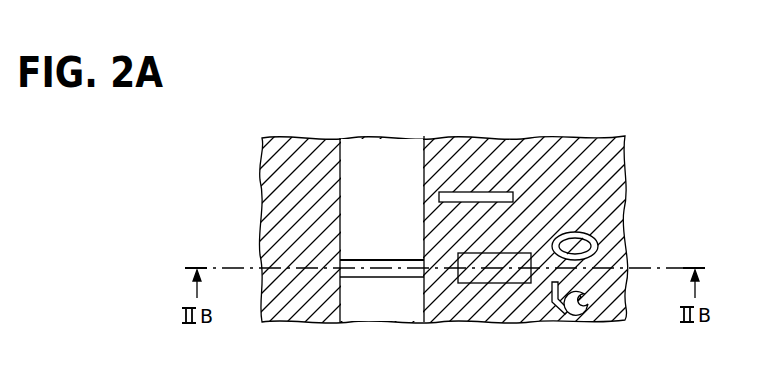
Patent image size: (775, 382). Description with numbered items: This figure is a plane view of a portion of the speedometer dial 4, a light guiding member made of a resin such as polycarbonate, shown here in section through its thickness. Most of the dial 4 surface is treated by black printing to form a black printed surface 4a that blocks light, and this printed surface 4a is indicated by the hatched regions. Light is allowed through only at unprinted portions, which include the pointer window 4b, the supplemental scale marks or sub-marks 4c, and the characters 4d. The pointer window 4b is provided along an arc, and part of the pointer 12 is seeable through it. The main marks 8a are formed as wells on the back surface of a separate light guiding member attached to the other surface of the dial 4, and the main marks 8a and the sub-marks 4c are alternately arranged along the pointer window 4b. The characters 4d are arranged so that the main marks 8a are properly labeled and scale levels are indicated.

The dial 4 is at (585, 138).
The black printed surface 4a is at (312, 246).
The pointer window 4b is at (368, 160).
The supplemental scale marks 4c is at (477, 191).
The characters 4d is at (597, 234).
The main marks 8a is at (517, 284).
The pointer 12 is at (378, 279).